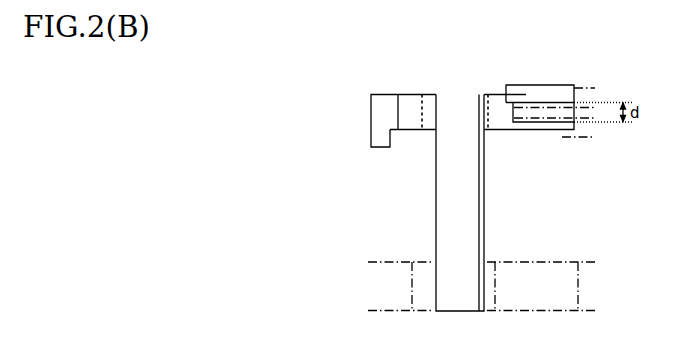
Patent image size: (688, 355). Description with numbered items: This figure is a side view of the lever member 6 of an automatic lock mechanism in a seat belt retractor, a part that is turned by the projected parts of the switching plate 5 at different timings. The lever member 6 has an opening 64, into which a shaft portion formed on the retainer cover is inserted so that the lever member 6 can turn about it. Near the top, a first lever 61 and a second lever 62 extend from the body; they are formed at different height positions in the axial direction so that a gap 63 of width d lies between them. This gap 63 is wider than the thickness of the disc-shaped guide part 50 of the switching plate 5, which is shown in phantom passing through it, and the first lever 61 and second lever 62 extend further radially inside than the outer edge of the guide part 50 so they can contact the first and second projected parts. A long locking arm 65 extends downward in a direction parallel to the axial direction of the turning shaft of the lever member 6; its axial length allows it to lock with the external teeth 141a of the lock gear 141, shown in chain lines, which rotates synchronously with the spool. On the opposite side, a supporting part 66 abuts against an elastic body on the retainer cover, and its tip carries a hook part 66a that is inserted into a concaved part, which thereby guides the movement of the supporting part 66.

The switching plate 5 is at (585, 88).
The lever member 6 is at (352, 77).
The guide part 50 is at (532, 107).
The first lever 61 is at (557, 93).
The second lever 62 is at (545, 131).
The gap 63 is at (508, 110).
The opening 64 is at (421, 118).
The locking arm 65 is at (435, 222).
The supporting part 66 is at (370, 106).
The hook part 66a is at (381, 148).
The lock gear 141 is at (541, 262).
The external teeth 141a is at (498, 287).